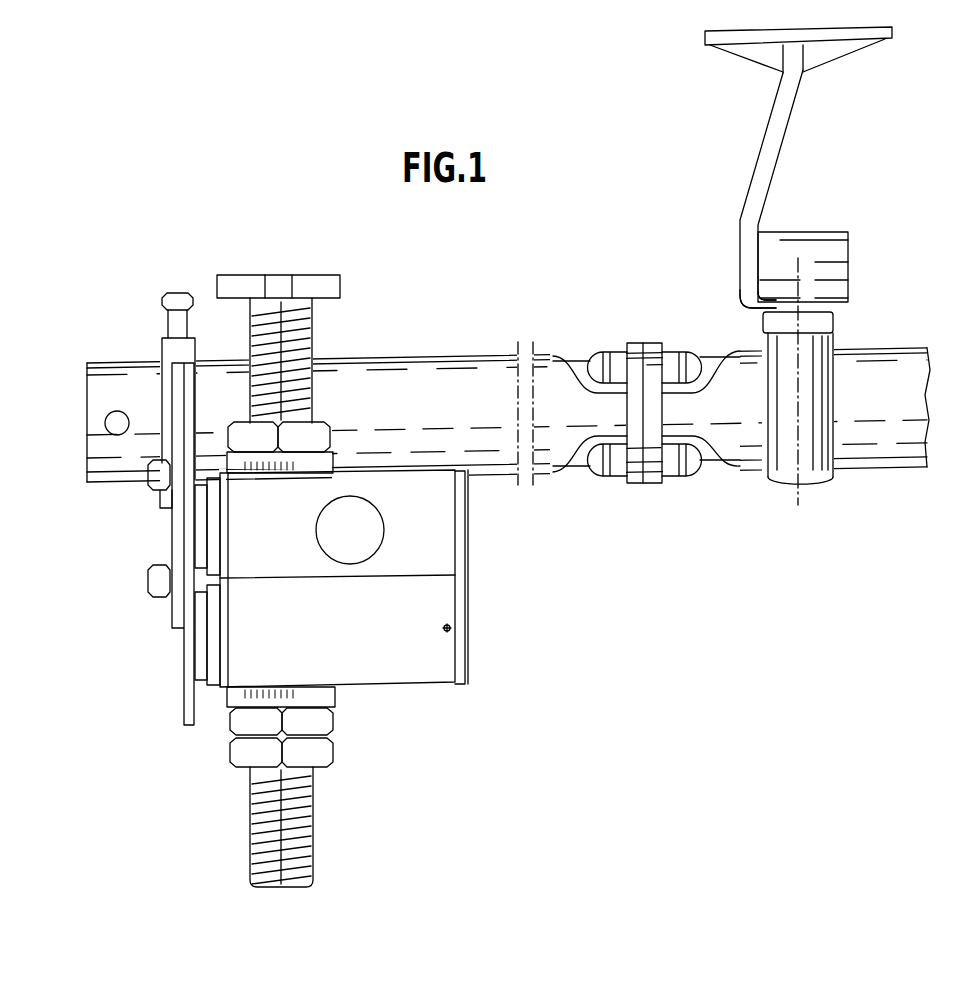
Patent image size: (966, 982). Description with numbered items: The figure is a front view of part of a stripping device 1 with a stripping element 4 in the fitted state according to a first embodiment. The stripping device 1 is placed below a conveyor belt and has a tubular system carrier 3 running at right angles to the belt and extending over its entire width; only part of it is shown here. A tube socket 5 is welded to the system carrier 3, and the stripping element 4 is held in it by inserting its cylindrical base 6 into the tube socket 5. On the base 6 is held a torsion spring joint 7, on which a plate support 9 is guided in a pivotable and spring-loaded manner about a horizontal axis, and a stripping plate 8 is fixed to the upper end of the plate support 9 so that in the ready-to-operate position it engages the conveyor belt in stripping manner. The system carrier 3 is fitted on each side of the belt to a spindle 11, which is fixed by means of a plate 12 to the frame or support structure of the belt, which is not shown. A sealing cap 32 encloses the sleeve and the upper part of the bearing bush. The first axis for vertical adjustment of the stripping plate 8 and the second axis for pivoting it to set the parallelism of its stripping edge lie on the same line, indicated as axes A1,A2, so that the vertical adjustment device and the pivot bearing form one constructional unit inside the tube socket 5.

The stripping device 1 is at (580, 549).
The system carrier 3 is at (884, 372).
The stripping element 4 is at (788, 142).
The tube socket 5 is at (820, 361).
The base 6 is at (740, 308).
The torsion spring joint 7 is at (848, 240).
The stripping plate 8 is at (887, 33).
The plate support 9 is at (780, 128).
The spindle 11 is at (317, 833).
The plate 12 is at (243, 285).
The sealing cap 32 is at (757, 328).
The first axis and second axis A1,A2 is at (798, 505).